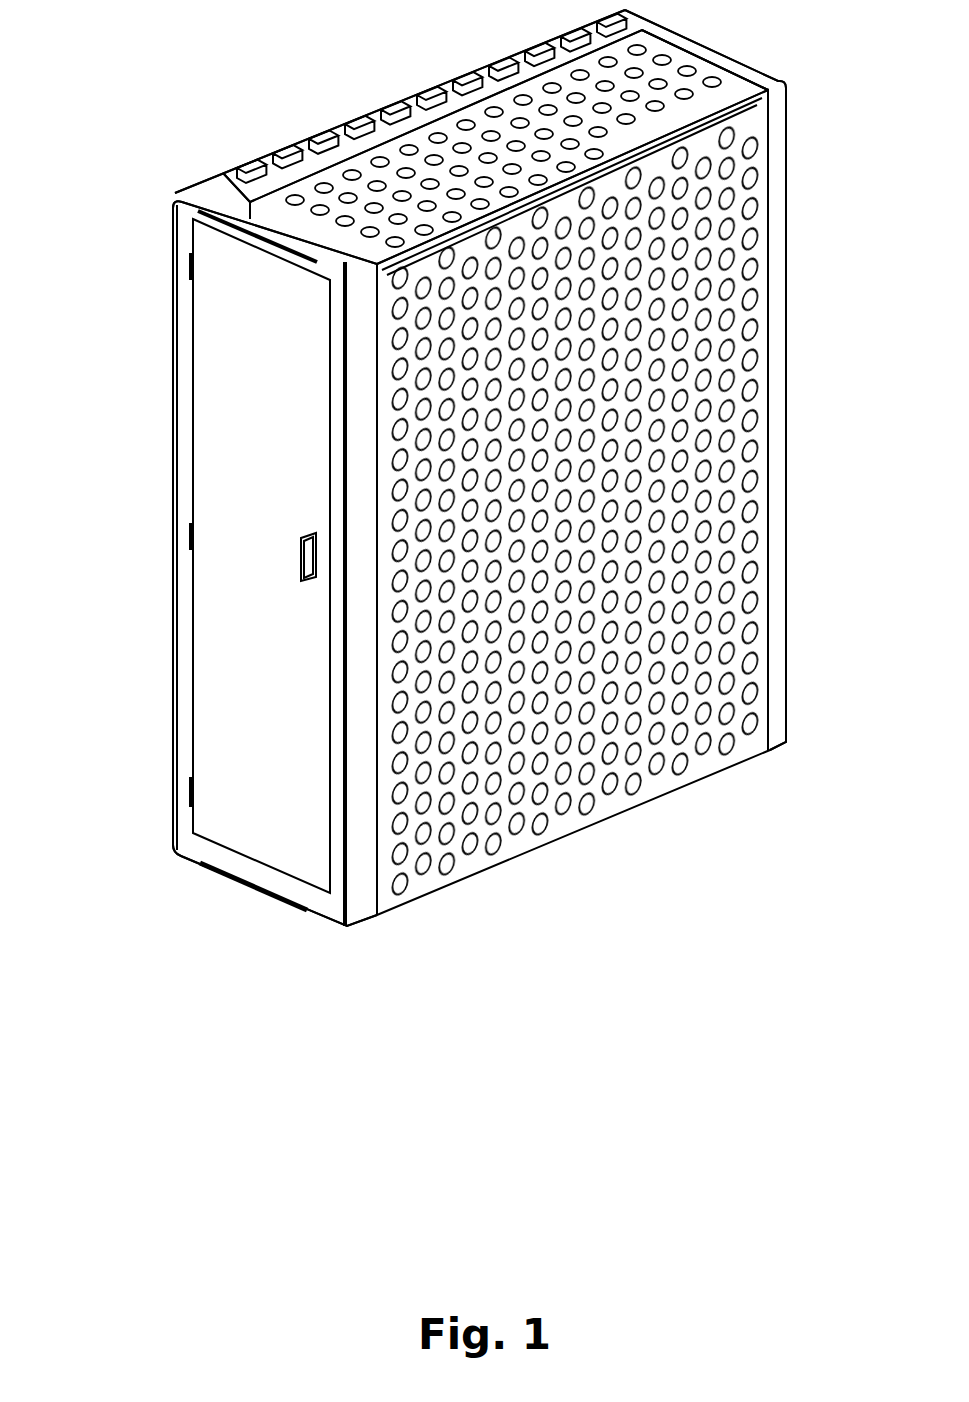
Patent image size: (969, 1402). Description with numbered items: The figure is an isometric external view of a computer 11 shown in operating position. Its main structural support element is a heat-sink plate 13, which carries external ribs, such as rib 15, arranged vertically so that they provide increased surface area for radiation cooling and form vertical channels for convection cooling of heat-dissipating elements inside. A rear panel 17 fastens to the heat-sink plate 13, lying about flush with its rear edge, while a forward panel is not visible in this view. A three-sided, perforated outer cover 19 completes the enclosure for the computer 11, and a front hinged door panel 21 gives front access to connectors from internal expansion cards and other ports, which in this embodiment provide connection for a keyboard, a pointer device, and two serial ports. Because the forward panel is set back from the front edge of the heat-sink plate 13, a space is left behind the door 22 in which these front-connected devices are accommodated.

The computer 11 is at (203, 143).
The heat-sink plate 13 is at (360, 113).
The rib 15 is at (487, 70).
The rear panel 17 is at (747, 70).
The perforated outer cover 19 is at (756, 259).
The front hinged door panel 21 is at (167, 288).
The door 22 is at (227, 658).